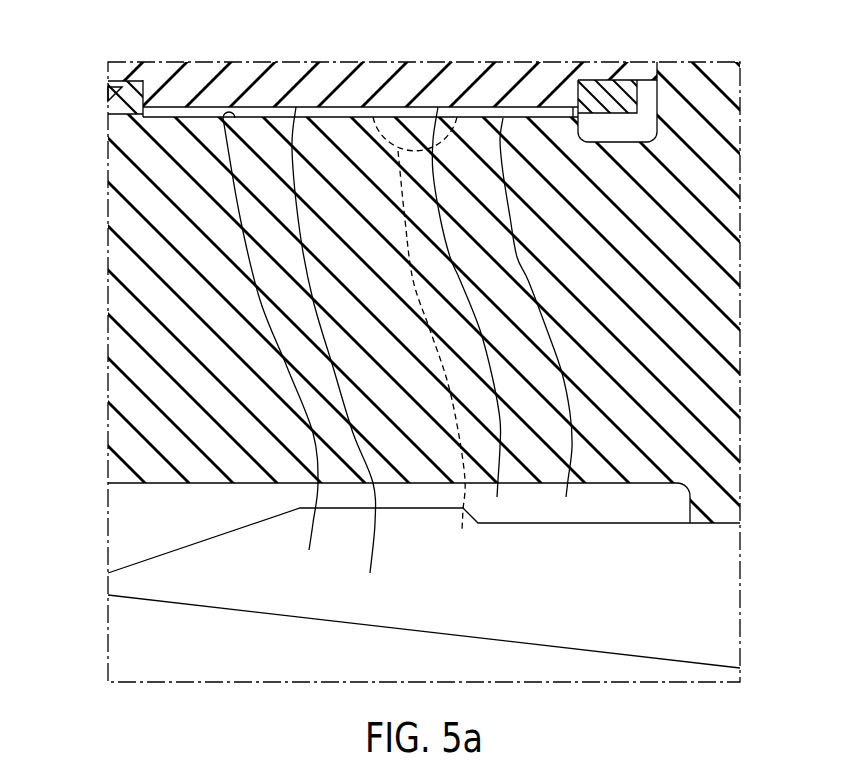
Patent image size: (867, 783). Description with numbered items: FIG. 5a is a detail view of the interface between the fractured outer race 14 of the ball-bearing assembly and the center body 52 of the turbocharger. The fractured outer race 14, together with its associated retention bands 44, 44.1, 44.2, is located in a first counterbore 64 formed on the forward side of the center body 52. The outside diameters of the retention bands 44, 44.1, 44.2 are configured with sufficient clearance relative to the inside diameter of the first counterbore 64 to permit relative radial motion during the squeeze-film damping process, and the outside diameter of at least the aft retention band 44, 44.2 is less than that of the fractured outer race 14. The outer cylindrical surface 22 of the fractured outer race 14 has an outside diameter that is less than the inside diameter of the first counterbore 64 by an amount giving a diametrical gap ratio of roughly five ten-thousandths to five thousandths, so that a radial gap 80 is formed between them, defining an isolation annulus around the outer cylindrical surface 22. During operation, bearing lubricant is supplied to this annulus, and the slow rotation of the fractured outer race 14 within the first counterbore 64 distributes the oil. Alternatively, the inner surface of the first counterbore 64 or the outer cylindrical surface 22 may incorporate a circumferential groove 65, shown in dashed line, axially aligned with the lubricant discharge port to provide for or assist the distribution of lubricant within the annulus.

The fractured outer race 14 is at (377, 72).
The outer cylindrical surface 22 is at (467, 313).
The retention bands 44 is at (423, 108).
The retention band 44.1 is at (114, 92).
The aft retention band 44.2 is at (638, 110).
The center body 52 is at (723, 305).
The first counterbore 64 is at (190, 107).
The circumferential groove 65 is at (420, 337).
The radial gap 80 is at (544, 318).